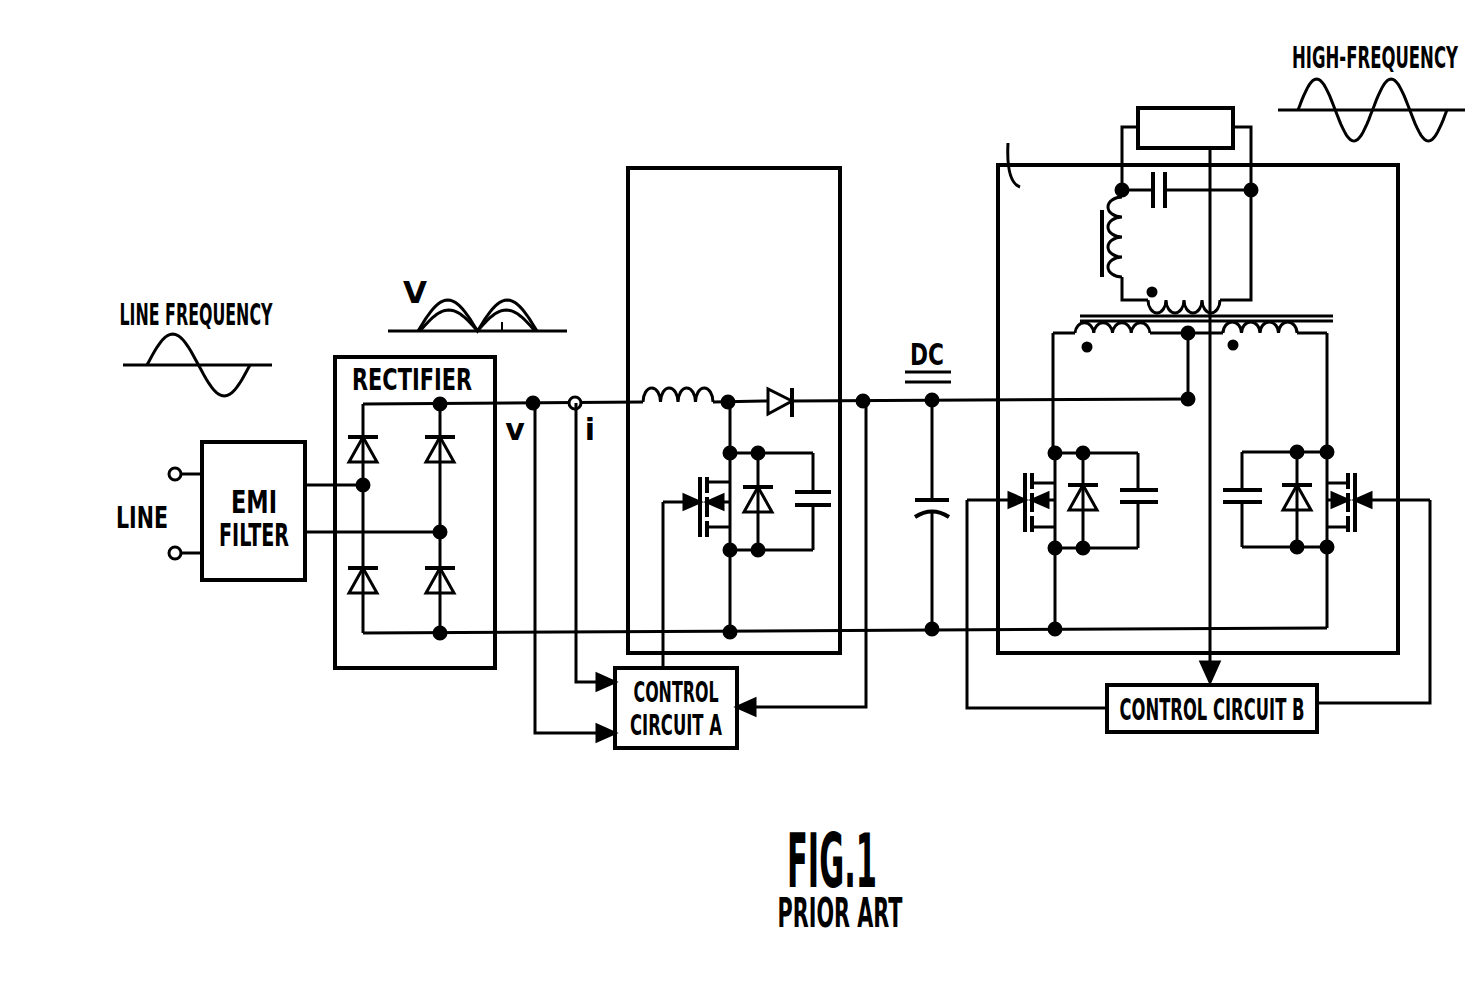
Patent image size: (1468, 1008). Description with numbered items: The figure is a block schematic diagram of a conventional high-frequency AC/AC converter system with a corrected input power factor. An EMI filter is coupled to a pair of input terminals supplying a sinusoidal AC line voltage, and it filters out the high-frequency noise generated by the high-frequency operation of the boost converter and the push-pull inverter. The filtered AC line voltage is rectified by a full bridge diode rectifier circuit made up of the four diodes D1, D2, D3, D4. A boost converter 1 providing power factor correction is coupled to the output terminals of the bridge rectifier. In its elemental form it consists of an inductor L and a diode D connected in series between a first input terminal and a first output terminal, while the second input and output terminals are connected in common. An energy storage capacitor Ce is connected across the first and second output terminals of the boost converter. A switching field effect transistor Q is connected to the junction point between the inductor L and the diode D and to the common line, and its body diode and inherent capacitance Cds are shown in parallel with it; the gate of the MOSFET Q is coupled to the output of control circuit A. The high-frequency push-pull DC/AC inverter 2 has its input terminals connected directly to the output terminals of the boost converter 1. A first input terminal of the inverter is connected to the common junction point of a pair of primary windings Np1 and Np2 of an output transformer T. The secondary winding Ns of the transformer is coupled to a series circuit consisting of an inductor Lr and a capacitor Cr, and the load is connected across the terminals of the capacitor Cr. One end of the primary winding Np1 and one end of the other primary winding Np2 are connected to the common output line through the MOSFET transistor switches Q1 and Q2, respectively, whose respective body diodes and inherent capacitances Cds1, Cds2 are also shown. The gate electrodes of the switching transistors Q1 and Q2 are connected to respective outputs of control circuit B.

The boost converter 1 is at (734, 418).
The high-frequency push-pull DC-AC inverter 2 is at (1176, 376).
The rectifier diode D1 is at (378, 471).
The rectifier diode D2 is at (451, 471).
The rectifier diode D3 is at (452, 566).
The rectifier diode D4 is at (378, 566).
The inductor L is at (713, 385).
The diode D is at (778, 383).
The switching field effect transistor Q is at (691, 499).
The inherent capacitance Cds is at (787, 524).
The energy storage capacitor Ce is at (924, 514).
The output transformer T is at (1192, 314).
The primary winding Np1 is at (1112, 352).
The primary winding Np2 is at (1260, 352).
The secondary winding Ns is at (1184, 291).
The inductor Lr is at (1094, 237).
The capacitor Cr is at (1186, 211).
The MOSFET transistor switch Q1 is at (1011, 482).
The MOSFET transistor switch Q2 is at (1378, 482).
The drain-source capacitance of Q1 Cds1 is at (1113, 523).
The drain-source capacitance of Q2 Cds2 is at (1267, 523).